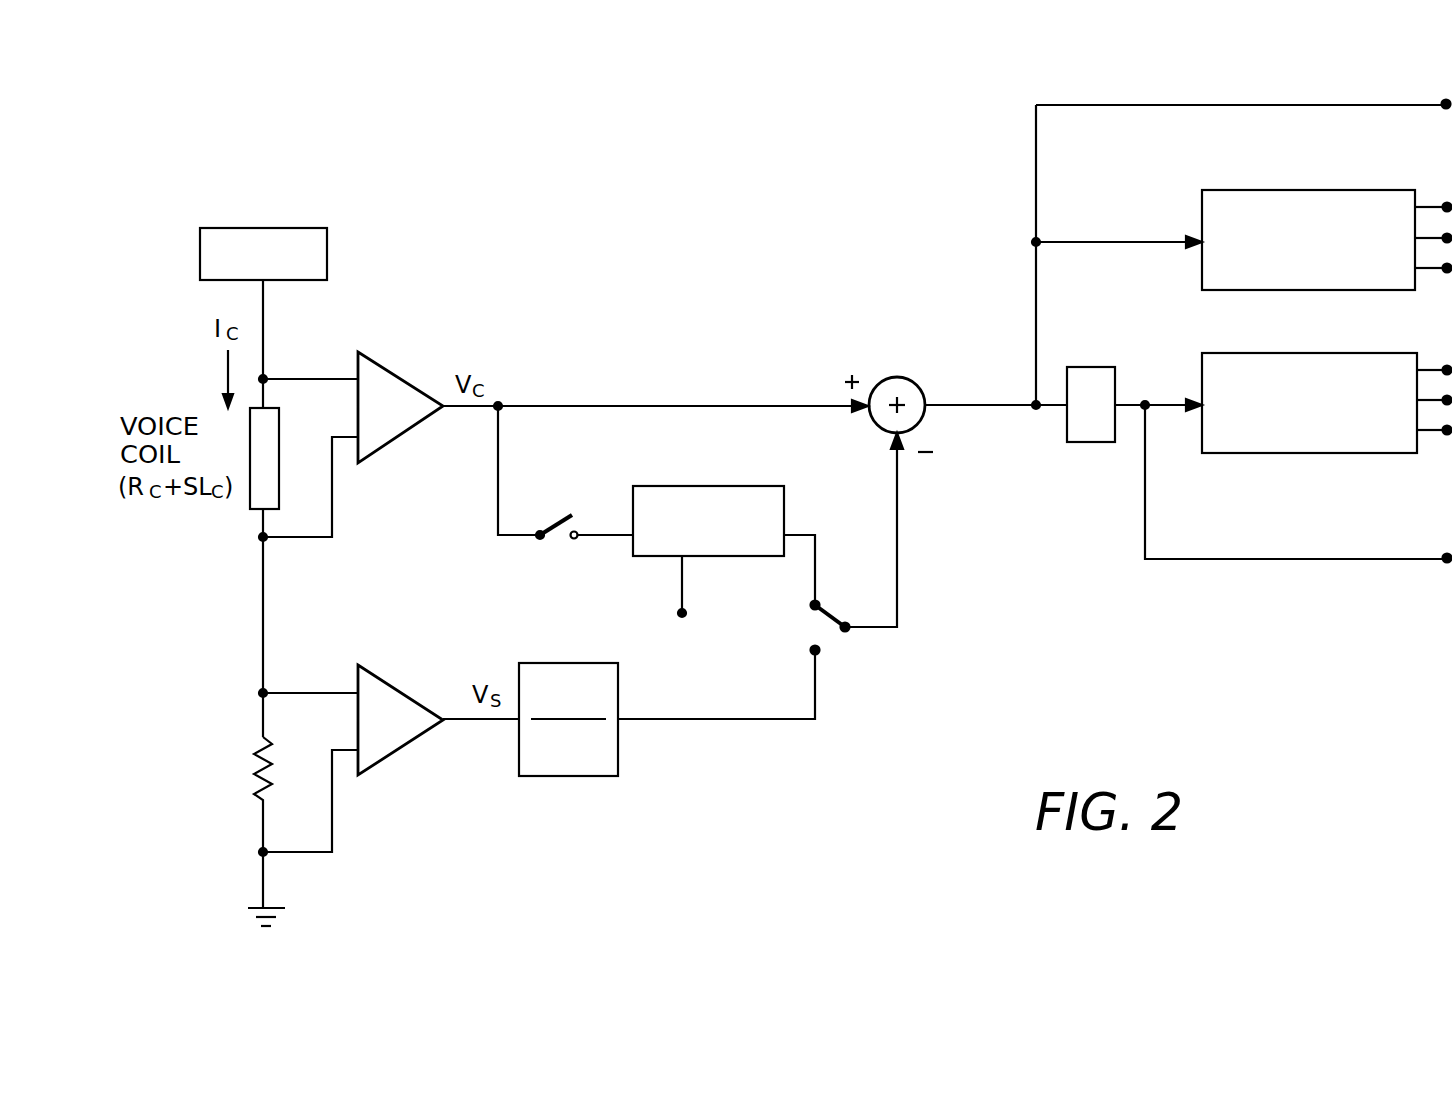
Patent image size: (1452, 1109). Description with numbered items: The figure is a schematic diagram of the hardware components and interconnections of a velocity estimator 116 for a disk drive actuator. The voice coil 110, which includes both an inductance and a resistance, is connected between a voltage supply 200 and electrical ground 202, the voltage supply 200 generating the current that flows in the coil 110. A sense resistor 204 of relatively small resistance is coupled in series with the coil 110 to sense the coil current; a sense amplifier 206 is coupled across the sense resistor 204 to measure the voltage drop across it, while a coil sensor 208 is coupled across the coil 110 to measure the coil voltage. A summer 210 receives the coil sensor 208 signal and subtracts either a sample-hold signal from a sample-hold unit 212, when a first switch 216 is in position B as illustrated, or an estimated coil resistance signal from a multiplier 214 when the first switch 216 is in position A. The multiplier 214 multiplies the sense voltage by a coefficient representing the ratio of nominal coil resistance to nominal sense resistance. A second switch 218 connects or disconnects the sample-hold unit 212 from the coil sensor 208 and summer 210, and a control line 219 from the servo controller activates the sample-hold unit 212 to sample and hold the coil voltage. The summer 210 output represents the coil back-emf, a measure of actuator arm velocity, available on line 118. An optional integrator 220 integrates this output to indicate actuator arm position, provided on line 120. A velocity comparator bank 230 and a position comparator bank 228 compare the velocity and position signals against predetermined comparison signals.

The voice coil 110 is at (257, 510).
The velocity estimator 116 is at (683, 260).
The line 118 is at (1305, 107).
The line 120 is at (1308, 560).
The voltage supply 200 is at (328, 254).
The electrical ground 202 is at (258, 907).
The sense resistor 204 is at (260, 745).
The sense amplifier 206 is at (381, 676).
The coil sensor 208 is at (380, 363).
The summer 210 is at (893, 372).
The sample-hold unit 212 is at (680, 486).
The multiplier 214 is at (540, 776).
The first switch 216 is at (833, 607).
The second switch 218 is at (560, 518).
The control line 219 is at (682, 592).
The integrator 220 is at (1095, 442).
The position comparator bank 228 is at (1308, 453).
The velocity comparator bank 230 is at (1305, 290).